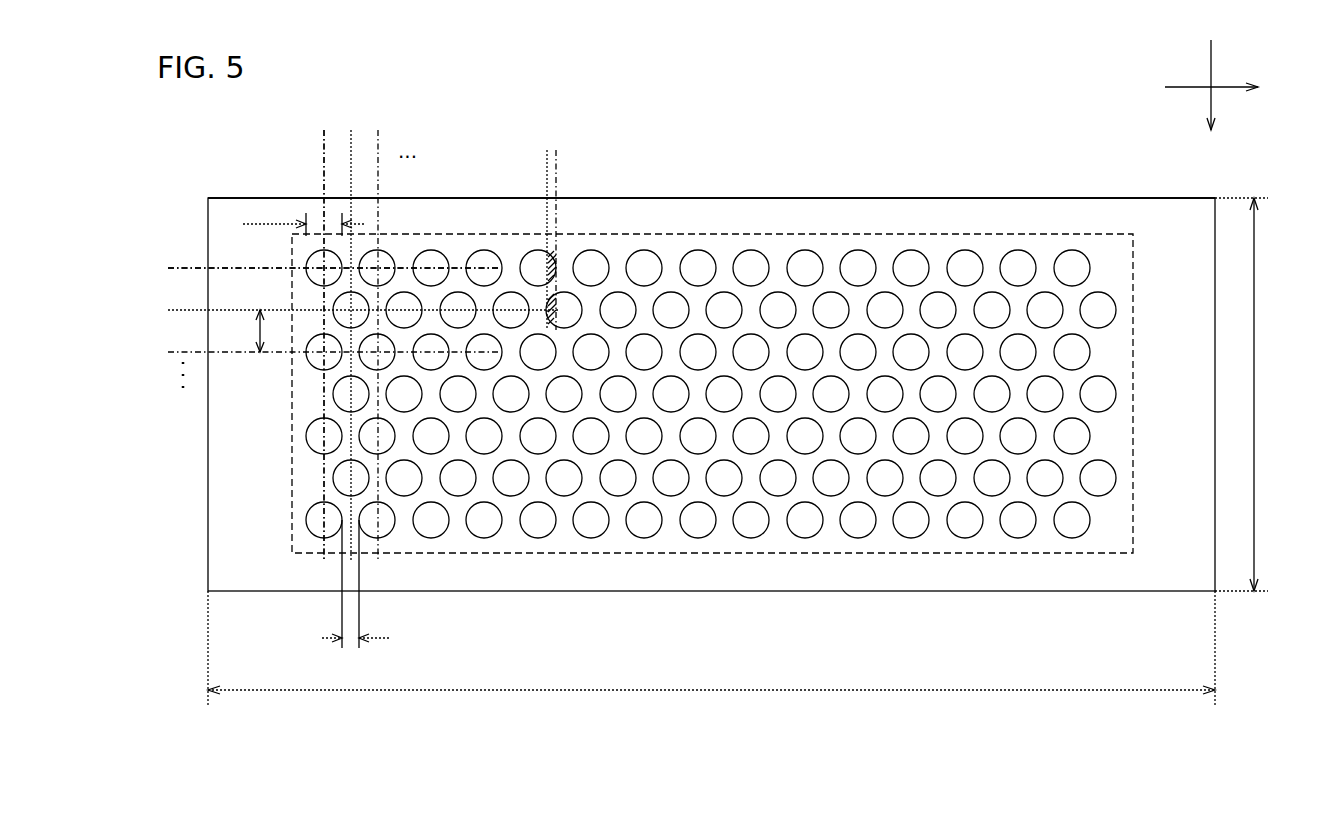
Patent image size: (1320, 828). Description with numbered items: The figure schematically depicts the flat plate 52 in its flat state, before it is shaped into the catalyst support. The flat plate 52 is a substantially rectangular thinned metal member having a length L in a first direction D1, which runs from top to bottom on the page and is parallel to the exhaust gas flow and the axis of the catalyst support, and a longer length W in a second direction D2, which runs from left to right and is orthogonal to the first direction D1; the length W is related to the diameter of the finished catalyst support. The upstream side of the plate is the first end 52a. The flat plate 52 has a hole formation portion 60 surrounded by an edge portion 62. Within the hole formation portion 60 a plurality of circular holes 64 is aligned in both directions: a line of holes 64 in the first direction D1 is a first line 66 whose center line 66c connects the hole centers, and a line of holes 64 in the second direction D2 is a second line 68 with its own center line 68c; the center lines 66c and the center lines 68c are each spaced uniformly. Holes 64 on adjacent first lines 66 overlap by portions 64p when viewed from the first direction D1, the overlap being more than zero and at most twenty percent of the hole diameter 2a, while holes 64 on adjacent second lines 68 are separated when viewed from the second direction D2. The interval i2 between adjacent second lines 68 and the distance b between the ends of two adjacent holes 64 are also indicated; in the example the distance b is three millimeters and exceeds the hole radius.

The flat plate 52 is at (632, 97).
The first end 52a is at (852, 198).
The hole formation portion 60 is at (676, 233).
The edge portion 62 is at (770, 216).
The holes 64 is at (484, 250).
The overlapping portions 64p is at (560, 308).
The first line 66 is at (384, 130).
The center line of the first line 66c is at (323, 156).
The second line 68 is at (160, 265).
The center line of the second line 68c is at (190, 265).
The diameter of the hole 2a is at (304, 218).
The interval between adjacent second lines i2 is at (248, 331).
The distance between ends of adjacent holes b is at (356, 584).
The length in the first direction L is at (1245, 394).
The length in the second direction W is at (711, 648).
The first direction D1 is at (1213, 98).
The second direction D2 is at (1230, 88).